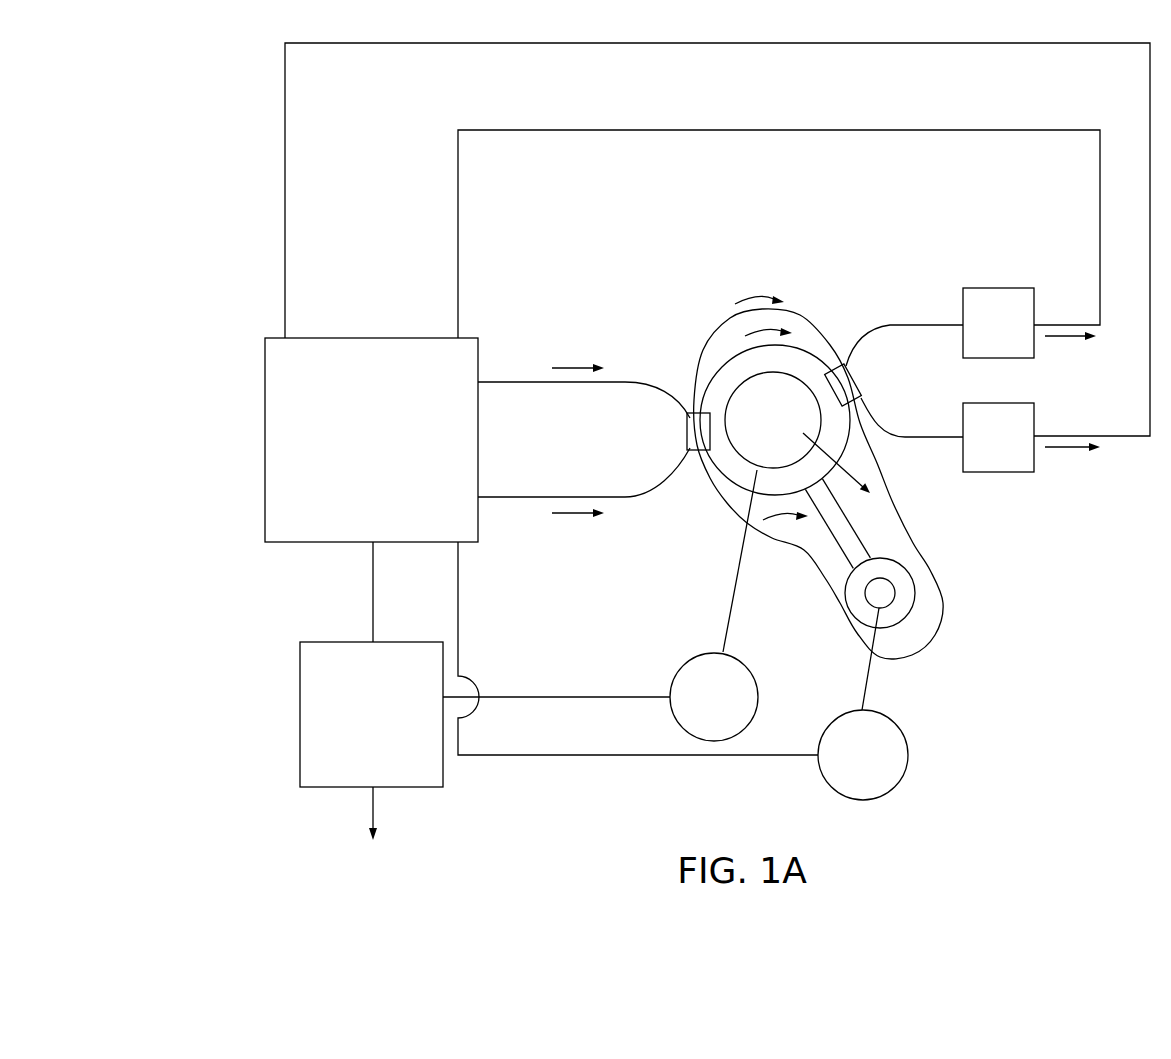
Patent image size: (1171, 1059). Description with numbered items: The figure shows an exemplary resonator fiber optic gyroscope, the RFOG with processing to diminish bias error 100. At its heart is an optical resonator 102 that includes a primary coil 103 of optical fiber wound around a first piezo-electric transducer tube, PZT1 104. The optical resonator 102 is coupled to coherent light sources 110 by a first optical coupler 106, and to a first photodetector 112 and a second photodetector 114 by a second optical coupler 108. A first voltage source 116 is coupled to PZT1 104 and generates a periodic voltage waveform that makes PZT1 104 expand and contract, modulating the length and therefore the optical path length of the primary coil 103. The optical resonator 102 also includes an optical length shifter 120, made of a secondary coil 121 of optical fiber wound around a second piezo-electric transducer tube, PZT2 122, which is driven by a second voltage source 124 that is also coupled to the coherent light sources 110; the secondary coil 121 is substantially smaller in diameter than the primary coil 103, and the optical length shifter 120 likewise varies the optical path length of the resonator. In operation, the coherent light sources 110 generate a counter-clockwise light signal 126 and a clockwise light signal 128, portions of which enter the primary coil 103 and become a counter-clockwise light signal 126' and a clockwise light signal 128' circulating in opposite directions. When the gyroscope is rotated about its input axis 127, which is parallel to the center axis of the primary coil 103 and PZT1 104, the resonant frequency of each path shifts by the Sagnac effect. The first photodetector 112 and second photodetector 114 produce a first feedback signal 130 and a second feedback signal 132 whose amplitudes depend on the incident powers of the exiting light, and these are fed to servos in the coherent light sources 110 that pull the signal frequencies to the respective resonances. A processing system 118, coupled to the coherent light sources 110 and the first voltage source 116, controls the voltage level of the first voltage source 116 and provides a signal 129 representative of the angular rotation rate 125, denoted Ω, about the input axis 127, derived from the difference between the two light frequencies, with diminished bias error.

The RFOG with processing to diminish bias error 100 is at (170, 107).
The optical resonator 102 is at (818, 345).
The primary coil of optical fiber 103 is at (727, 357).
The first piezo-electric transducer tube 104 is at (797, 451).
The first optical coupler 106 is at (687, 437).
The second optical coupler 108 is at (858, 391).
The coherent light sources 110 is at (397, 478).
The first photodetector 112 is at (975, 352).
The second photodetector 114 is at (975, 467).
The first voltage source 116 is at (692, 724).
The processing system 118 is at (349, 754).
The optical length shifter 120 is at (940, 595).
The secondary coil of optical fiber 121 is at (915, 630).
The second piezo-electric transducer tube 122 is at (882, 588).
The second voltage source 124 is at (842, 783).
The angular rotation rate 125 is at (753, 284).
The counter-clockwise light signal 126 is at (576, 340).
The counter-clockwise light signal circulating in primary coil 126' is at (777, 554).
The input axis 127 is at (851, 483).
The clockwise light signal 128 is at (582, 546).
The clockwise light signal circulating in primary coil 128' is at (788, 273).
The signal representative of the angular rate of rotation 129 is at (372, 831).
The first feedback signal 130 is at (1074, 352).
The second feedback signal 132 is at (1074, 462).